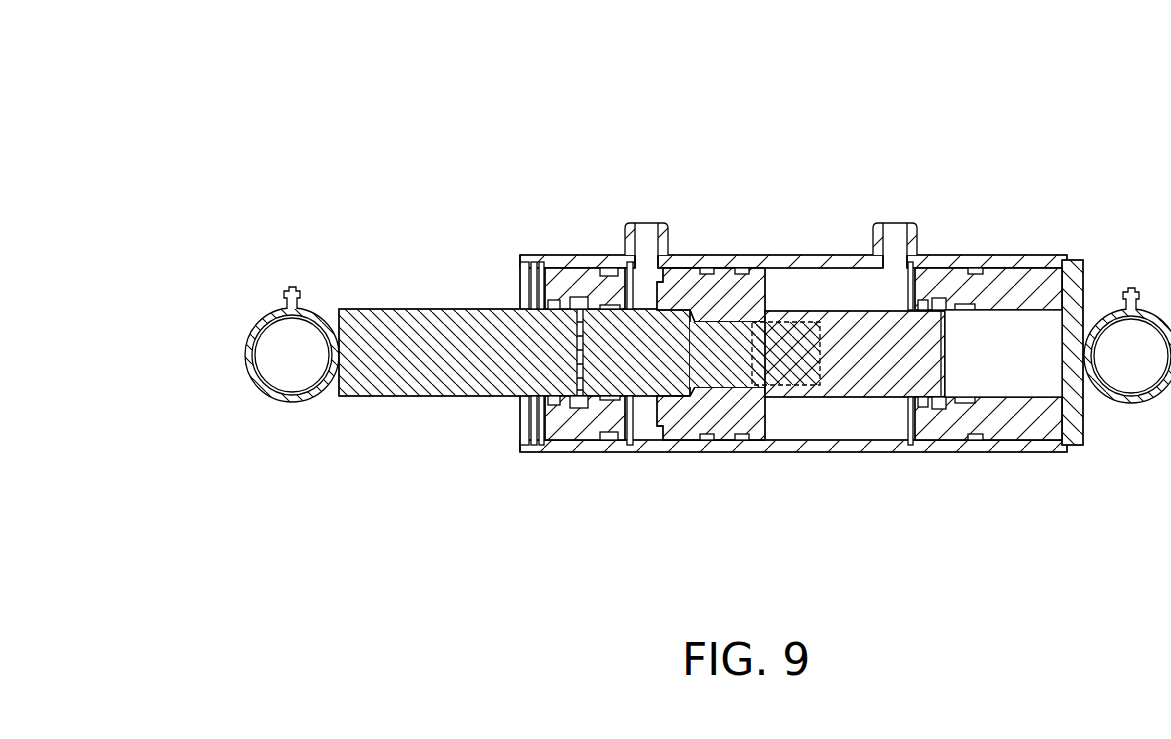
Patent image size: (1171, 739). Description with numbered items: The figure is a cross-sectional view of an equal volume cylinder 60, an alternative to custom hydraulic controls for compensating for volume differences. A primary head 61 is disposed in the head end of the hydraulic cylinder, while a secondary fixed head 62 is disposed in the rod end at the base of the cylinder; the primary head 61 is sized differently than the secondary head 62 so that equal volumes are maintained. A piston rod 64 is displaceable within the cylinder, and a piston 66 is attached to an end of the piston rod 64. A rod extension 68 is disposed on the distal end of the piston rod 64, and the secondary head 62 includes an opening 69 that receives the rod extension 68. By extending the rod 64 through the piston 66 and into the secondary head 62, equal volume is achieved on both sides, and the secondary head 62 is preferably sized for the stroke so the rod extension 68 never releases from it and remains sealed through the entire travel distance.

The equal volume cylinder 60 is at (289, 138).
The primary head 61 is at (587, 282).
The secondary fixed head 62 is at (997, 287).
The piston rod 64 is at (423, 306).
The piston 66 is at (677, 413).
The rod extension 68 is at (847, 400).
The opening 69 is at (1010, 366).